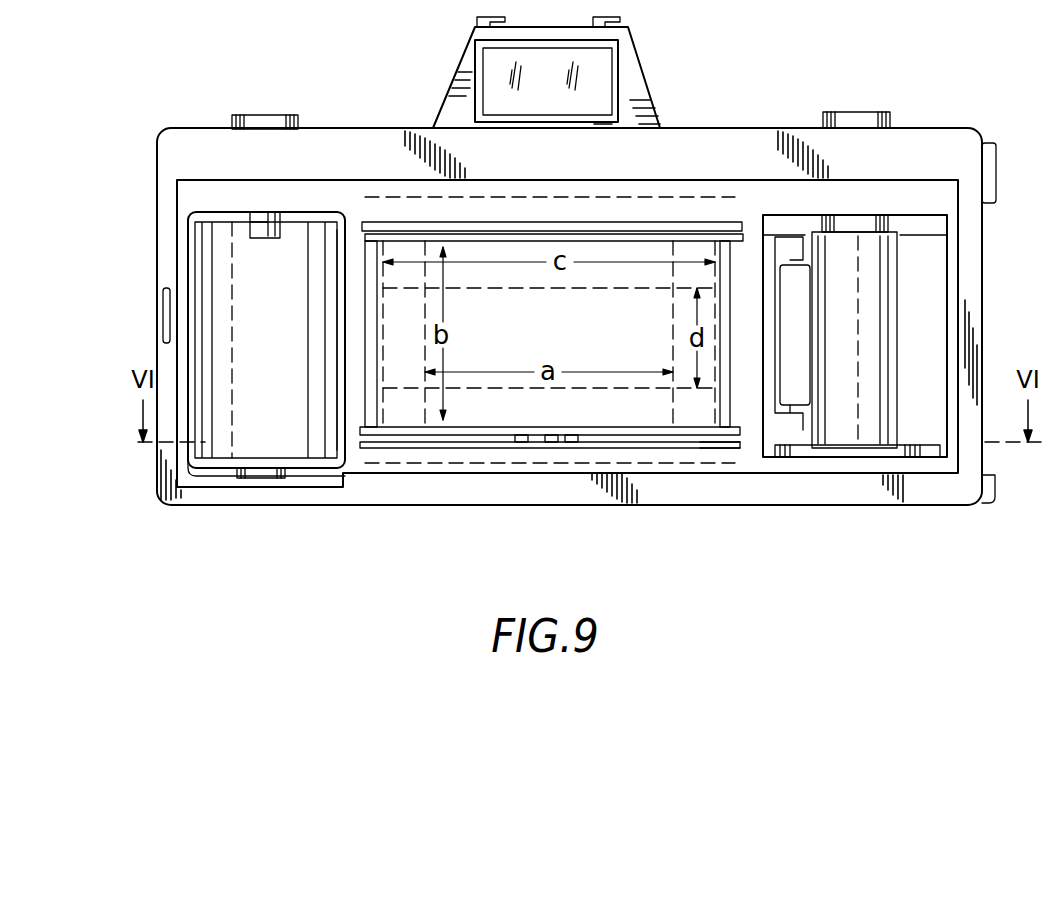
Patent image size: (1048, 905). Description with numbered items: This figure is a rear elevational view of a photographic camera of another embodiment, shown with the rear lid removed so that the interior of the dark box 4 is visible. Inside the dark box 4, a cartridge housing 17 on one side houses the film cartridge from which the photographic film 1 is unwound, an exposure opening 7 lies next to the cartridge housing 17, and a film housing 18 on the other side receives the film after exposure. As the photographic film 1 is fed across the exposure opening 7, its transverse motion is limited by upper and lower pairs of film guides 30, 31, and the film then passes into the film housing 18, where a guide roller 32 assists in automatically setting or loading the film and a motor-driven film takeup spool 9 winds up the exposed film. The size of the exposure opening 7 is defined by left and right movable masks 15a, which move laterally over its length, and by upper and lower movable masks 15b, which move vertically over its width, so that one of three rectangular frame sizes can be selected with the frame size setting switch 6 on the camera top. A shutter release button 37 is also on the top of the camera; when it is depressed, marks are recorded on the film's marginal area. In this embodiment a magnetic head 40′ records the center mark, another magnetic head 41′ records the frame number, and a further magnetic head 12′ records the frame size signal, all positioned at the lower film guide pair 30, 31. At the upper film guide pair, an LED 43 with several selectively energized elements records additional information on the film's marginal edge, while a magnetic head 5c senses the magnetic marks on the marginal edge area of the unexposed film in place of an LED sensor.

The photographic film 1 is at (262, 460).
The dark box 4 is at (340, 378).
The frame size setting switch 6 is at (277, 114).
The exposure opening 7 is at (405, 445).
The film takeup spool 9 is at (880, 247).
The left and right movable masks 15a is at (366, 262).
The upper and lower movable masks 15b is at (648, 200).
The cartridge housing 17 is at (205, 468).
The film housing 18 is at (915, 427).
The film guide 30 is at (400, 218).
The film guide 31 is at (373, 222).
The guide roller 32 is at (793, 397).
The shutter release button 37 is at (873, 112).
The magnetic head 40′ is at (549, 448).
The magnetic head 41′ is at (522, 448).
The magnetic head 12′ is at (556, 448).
The LED 43 is at (585, 240).
The magnetic head 5c is at (707, 455).